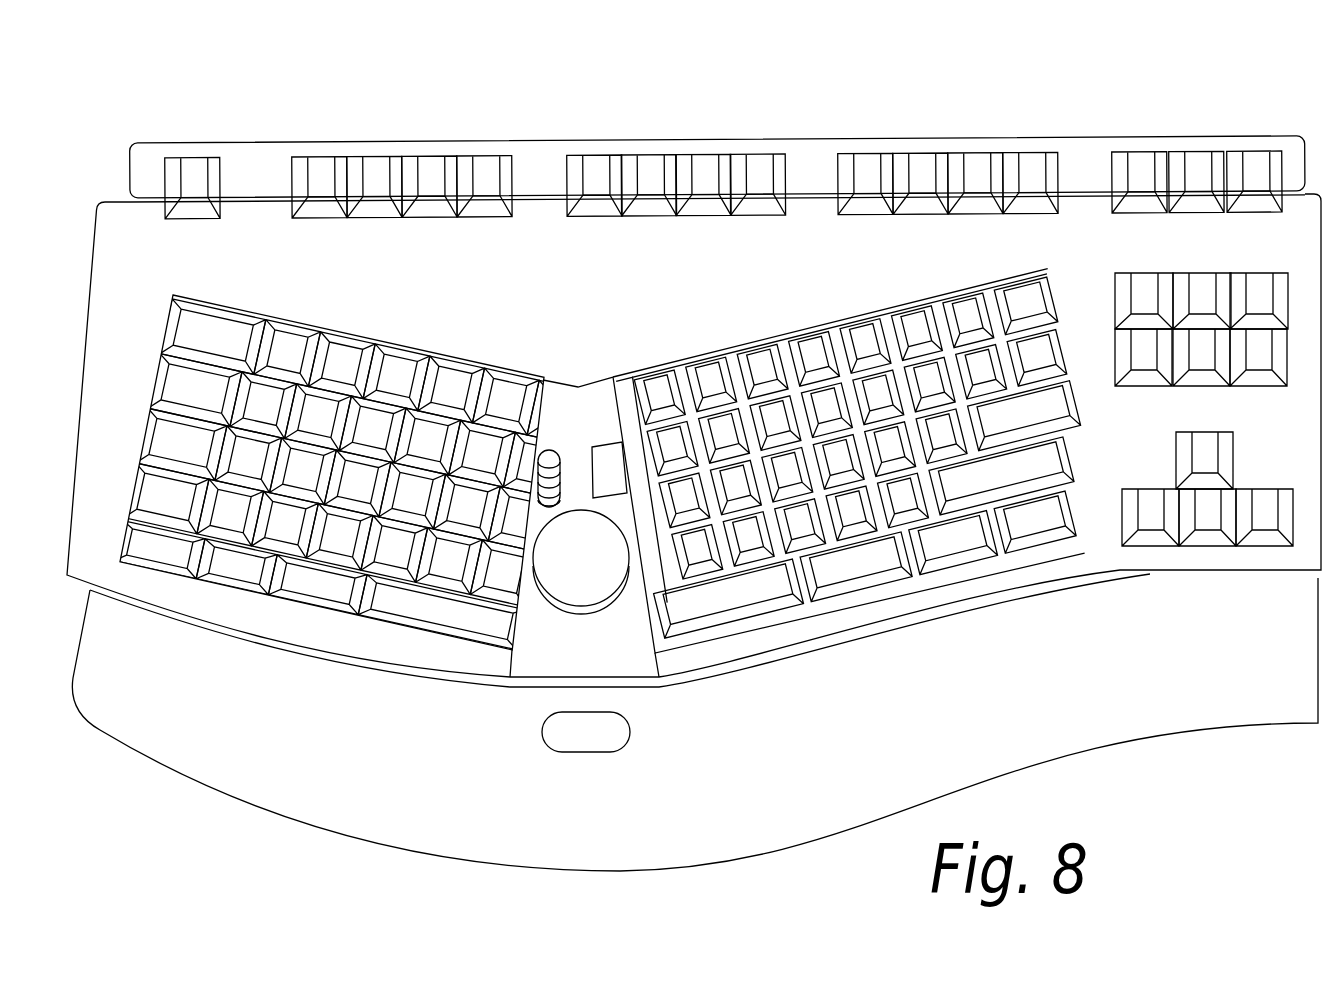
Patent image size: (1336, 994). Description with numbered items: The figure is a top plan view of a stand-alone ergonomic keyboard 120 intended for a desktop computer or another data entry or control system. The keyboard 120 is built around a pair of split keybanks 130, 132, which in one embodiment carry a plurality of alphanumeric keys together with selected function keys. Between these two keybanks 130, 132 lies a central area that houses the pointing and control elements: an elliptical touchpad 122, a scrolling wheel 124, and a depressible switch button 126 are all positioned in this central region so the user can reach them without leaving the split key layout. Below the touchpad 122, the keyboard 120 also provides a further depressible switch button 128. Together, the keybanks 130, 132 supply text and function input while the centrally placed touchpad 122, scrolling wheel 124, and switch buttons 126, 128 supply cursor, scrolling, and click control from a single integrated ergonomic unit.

The ergonomic keyboard 120 is at (918, 78).
The elliptical touchpad 122 is at (537, 594).
The scrolling wheel 124 is at (563, 452).
The depressible switch button 126 is at (602, 443).
The further depressible switch button 128 is at (571, 753).
The split keybank 130 is at (371, 341).
The split keybank 132 is at (783, 335).